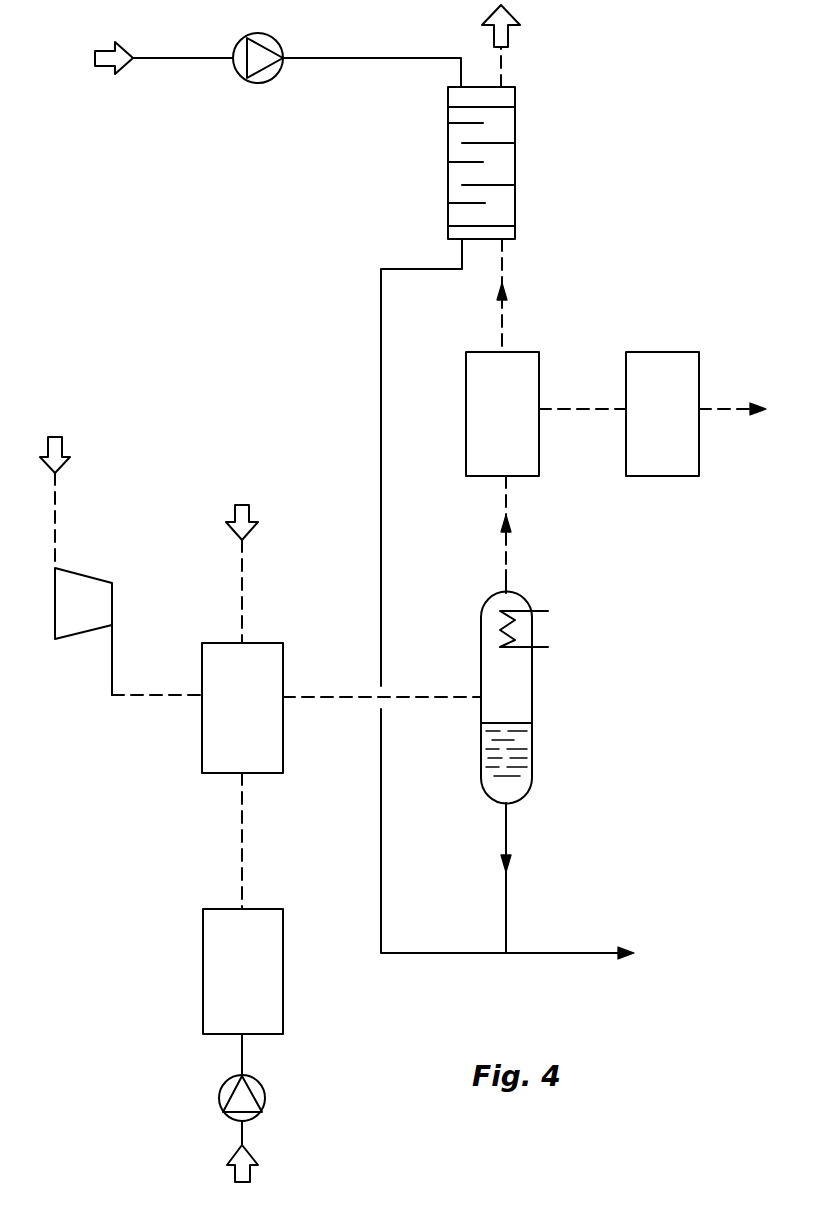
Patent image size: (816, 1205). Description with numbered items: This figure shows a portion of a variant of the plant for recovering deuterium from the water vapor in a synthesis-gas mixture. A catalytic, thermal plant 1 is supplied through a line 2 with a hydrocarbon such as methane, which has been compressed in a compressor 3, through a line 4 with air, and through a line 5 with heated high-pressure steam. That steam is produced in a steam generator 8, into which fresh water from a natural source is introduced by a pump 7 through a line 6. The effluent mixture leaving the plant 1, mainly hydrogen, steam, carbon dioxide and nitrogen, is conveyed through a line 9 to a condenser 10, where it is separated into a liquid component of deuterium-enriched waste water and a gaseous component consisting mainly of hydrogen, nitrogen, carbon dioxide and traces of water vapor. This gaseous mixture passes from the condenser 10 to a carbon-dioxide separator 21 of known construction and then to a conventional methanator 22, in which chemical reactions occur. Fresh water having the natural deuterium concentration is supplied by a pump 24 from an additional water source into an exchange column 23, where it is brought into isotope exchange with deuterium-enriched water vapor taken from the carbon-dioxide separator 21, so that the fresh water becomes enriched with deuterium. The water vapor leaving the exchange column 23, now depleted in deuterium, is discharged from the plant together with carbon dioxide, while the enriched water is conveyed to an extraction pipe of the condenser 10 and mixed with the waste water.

The catalytic thermal plant 1 is at (202, 664).
The line 2 is at (112, 652).
The compressor 3 is at (52, 600).
The line 4 is at (244, 583).
The line 5 is at (244, 832).
The line 6 is at (244, 1063).
The pump 7 is at (265, 1106).
The steam generator 8 is at (285, 985).
The line 9 is at (340, 699).
The condenser 10 is at (532, 710).
The carbon-dioxide separator 21 is at (540, 365).
The methanator 22 is at (700, 373).
The exchange column 23 is at (516, 168).
The pump 24 is at (282, 40).